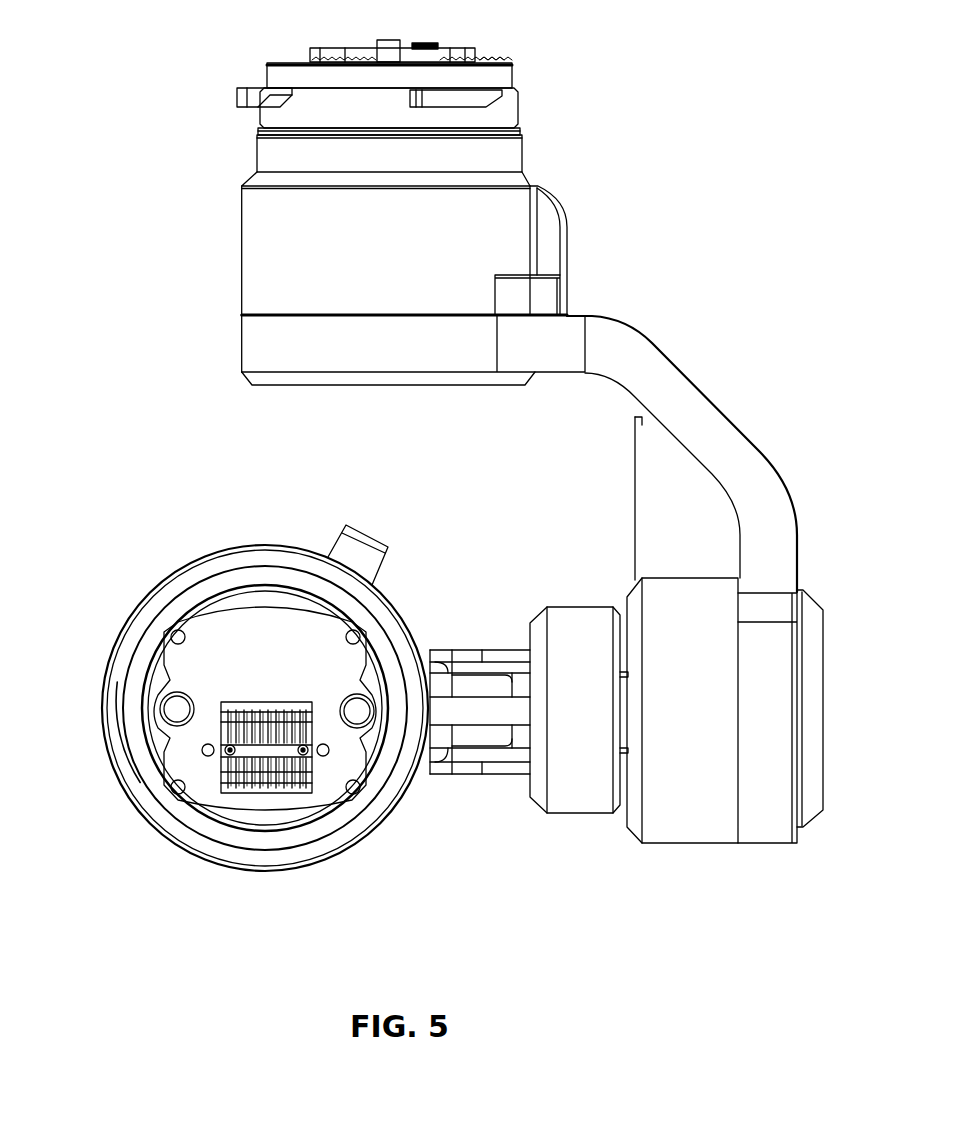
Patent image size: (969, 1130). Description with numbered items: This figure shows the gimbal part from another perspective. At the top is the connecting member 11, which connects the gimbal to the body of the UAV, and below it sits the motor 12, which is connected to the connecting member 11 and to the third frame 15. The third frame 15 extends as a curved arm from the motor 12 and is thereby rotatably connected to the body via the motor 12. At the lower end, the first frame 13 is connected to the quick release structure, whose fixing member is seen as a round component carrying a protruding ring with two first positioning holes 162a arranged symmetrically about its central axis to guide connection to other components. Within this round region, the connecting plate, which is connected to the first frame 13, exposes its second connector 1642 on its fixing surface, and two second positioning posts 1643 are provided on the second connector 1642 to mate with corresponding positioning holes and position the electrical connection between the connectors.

The connecting member 11 is at (285, 62).
The motor 12 is at (275, 245).
The first frame 13 is at (502, 767).
The third frame 15 is at (647, 380).
The first positioning hole 162a is at (177, 708).
The second connector 1642 is at (265, 795).
The second positioning post 1643 is at (230, 752).